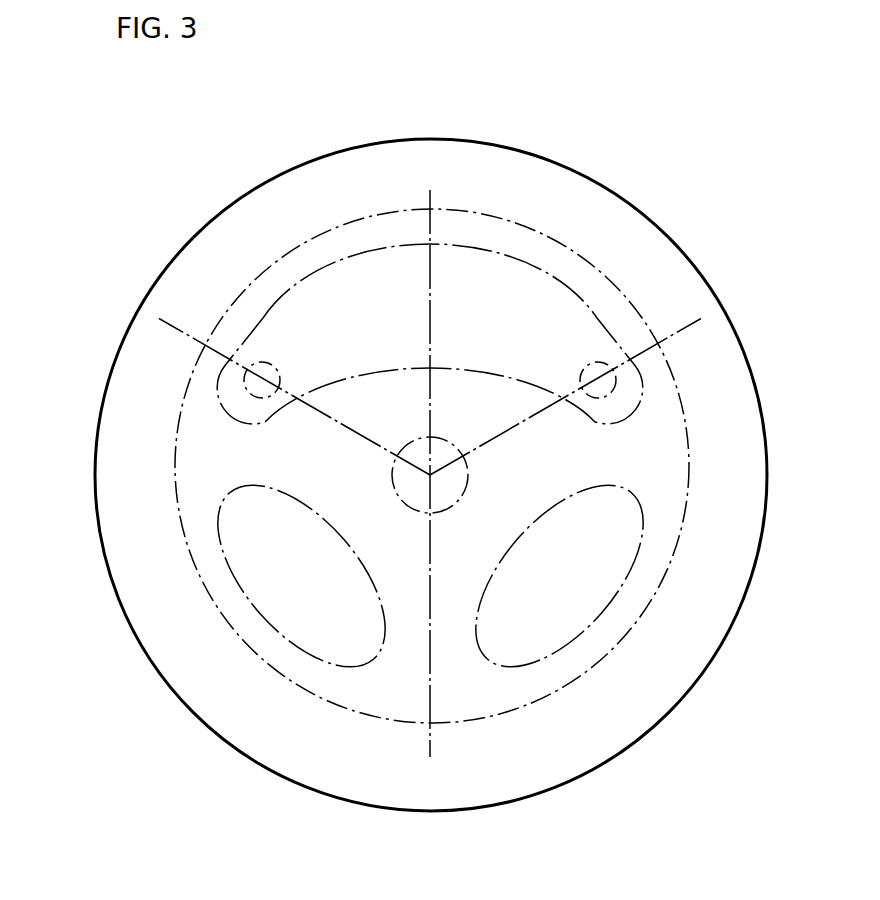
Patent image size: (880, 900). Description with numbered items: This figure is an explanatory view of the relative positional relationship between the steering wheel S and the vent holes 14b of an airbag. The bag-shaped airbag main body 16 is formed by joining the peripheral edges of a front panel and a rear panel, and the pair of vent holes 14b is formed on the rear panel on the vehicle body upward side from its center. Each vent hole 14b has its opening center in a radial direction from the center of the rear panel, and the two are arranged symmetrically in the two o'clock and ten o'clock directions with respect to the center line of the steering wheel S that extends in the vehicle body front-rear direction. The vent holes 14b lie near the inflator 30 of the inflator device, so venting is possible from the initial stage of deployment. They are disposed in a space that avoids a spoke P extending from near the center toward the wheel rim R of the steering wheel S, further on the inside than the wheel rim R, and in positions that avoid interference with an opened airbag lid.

The vent holes 14b is at (263, 362).
The airbag main body 16 is at (712, 242).
The steering wheel S is at (712, 395).
The inflator 30 is at (468, 480).
The spoke P is at (270, 463).
The wheel rim R is at (313, 683).